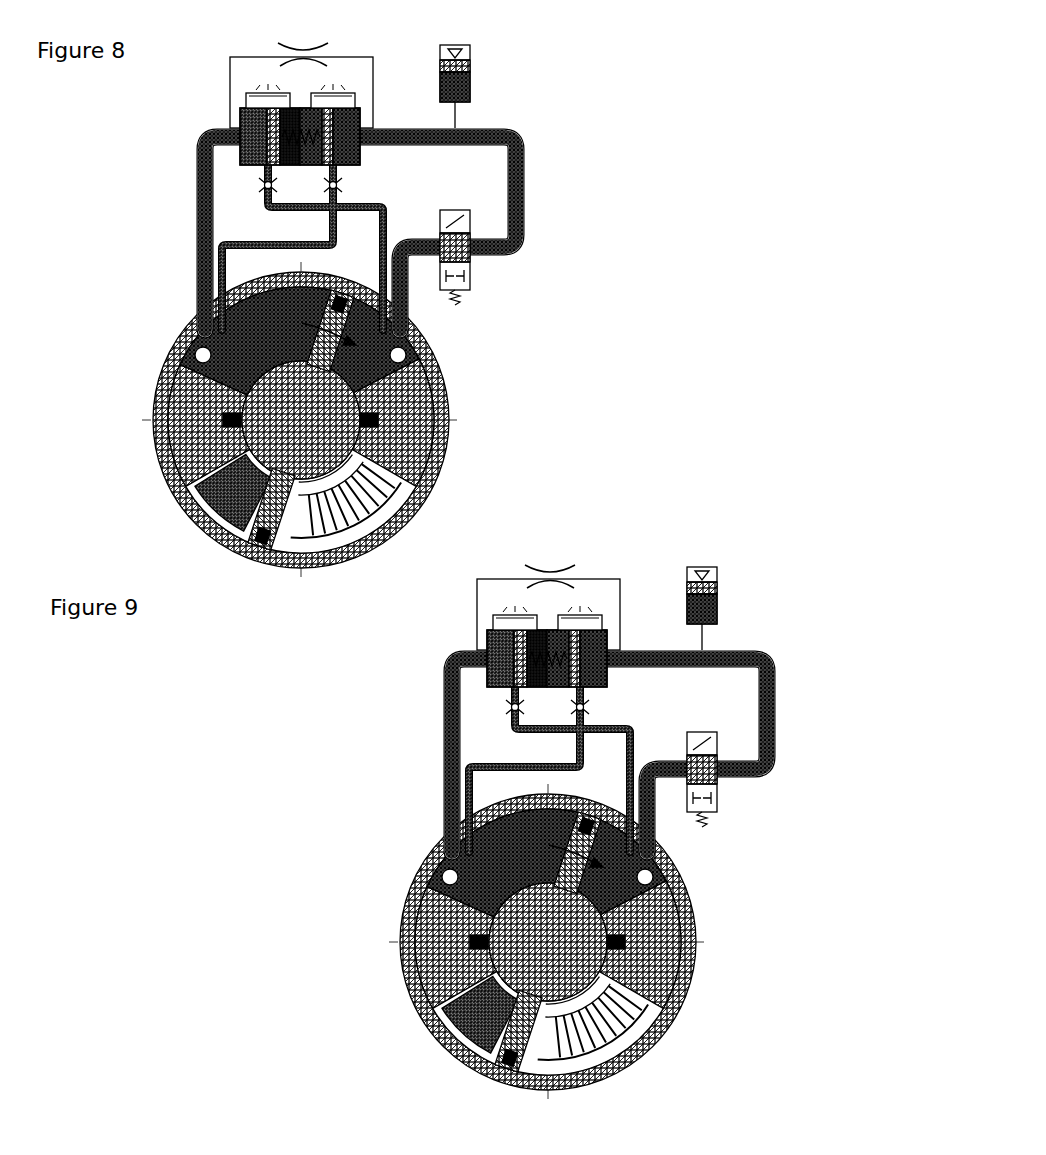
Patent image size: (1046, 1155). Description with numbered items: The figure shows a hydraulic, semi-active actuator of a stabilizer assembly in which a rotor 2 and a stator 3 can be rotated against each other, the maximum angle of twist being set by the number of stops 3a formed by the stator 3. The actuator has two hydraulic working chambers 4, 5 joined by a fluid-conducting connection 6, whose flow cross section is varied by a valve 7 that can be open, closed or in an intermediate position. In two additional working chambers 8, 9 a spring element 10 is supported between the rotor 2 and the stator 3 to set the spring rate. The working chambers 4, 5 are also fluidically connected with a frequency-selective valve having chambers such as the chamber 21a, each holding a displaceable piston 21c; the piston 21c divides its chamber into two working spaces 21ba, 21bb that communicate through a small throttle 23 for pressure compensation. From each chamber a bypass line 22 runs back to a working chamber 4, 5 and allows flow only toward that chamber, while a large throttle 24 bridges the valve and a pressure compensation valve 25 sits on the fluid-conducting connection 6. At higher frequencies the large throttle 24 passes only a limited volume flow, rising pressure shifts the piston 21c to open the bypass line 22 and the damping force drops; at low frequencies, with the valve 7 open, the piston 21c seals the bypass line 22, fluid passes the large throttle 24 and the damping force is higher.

In FIG. 8, the rotor 2 is at (277, 498).
In FIG. 9, the rotor 2 is at (497, 942).
In FIG. 8, the stator 3 is at (228, 403).
In FIG. 9, the stator 3 is at (509, 971).
In FIG. 8, the stops 3a is at (405, 445).
In FIG. 9, the stops 3a is at (686, 945).
In FIG. 8, the working chamber 4 is at (253, 340).
In FIG. 9, the working chamber 4 is at (510, 863).
In FIG. 8, the working chamber 5 is at (363, 358).
In FIG. 9, the working chamber 5 is at (619, 942).
In FIG. 8, the fluid-conducting connection 6 is at (517, 172).
In FIG. 9, the fluid-conducting connection 6 is at (618, 728).
In FIG. 8, the valve 7 is at (470, 267).
In FIG. 9, the valve 7 is at (736, 779).
In FIG. 8, the additional working chamber 8 is at (220, 517).
In FIG. 9, the additional working chamber 8 is at (440, 1024).
In FIG. 8, the additional working chamber 9 is at (373, 518).
In FIG. 9, the additional working chamber 9 is at (633, 1017).
In FIG. 8, the spring element 10 is at (367, 493).
In FIG. 9, the spring element 10 is at (650, 1013).
In FIG. 8, the chamber of the valve 21a is at (257, 127).
In FIG. 9, the chamber of the valve 21a is at (483, 653).
In FIG. 8, the working space 21ba is at (335, 157).
In FIG. 9, the working space 21ba is at (614, 675).
In FIG. 8, the working space 21bb is at (345, 127).
In FIG. 9, the working space 21bb is at (648, 662).
In FIG. 8, the piston 21c is at (327, 118).
In FIG. 9, the piston 21c is at (493, 612).
In FIG. 8, the fluid line 22 is at (330, 222).
In FIG. 9, the fluid line 22 is at (484, 769).
In FIG. 8, the throttle 23 is at (330, 90).
In FIG. 9, the throttle 23 is at (564, 577).
In FIG. 8, the large throttle 24 is at (307, 55).
In FIG. 9, the large throttle 24 is at (554, 556).
In FIG. 8, the pressure compensation valve 25 is at (333, 185).
In FIG. 9, the pressure compensation valve 25 is at (548, 610).